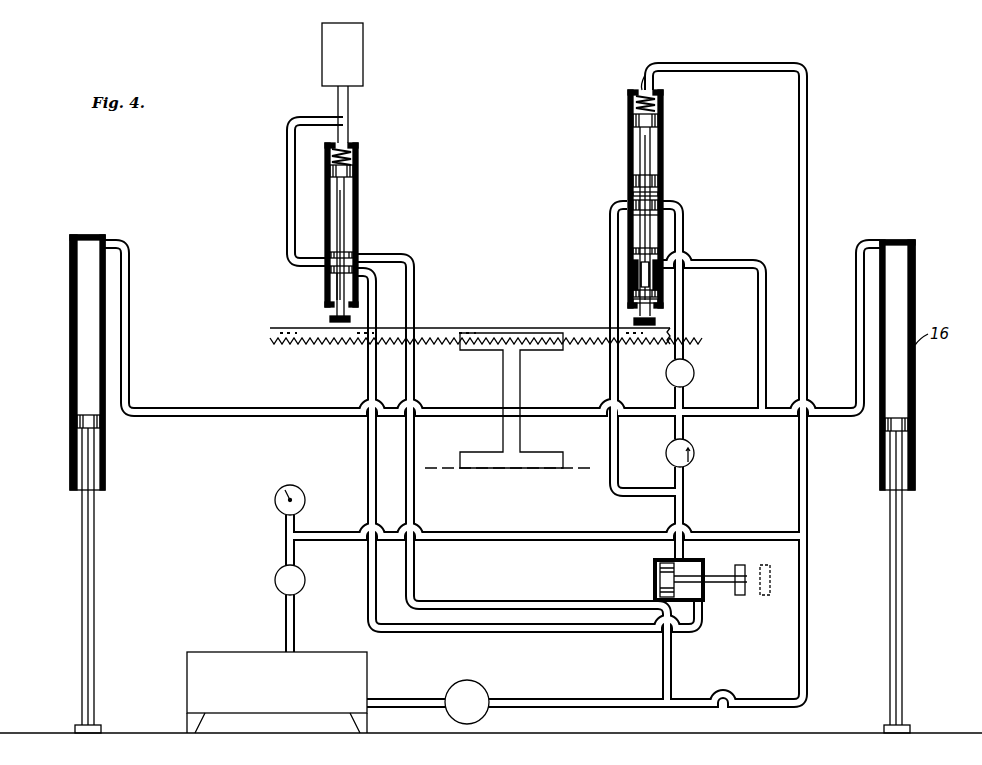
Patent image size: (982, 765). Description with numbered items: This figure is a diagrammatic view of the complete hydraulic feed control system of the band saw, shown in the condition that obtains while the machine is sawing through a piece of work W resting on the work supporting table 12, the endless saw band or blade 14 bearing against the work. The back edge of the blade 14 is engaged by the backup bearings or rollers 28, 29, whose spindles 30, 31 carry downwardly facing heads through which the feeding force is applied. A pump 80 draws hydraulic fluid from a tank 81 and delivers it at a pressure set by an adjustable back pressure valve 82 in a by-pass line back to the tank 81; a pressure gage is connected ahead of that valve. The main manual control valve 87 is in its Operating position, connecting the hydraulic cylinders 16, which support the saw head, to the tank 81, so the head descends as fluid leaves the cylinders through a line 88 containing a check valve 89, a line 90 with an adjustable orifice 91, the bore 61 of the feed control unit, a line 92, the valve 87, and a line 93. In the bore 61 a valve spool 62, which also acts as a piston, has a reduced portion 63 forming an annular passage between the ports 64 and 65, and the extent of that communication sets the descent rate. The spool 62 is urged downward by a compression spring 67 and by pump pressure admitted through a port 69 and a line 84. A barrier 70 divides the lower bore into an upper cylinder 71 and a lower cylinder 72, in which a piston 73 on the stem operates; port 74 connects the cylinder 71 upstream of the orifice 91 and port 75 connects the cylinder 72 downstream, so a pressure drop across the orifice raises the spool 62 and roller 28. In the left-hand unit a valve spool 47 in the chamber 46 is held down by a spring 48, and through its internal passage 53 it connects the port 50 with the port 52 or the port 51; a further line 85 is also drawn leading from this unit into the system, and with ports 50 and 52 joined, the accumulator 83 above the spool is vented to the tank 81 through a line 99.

The work supporting table 12 is at (450, 466).
The endless saw band or blade 14 is at (442, 327).
The hydraulic cylinders 16 is at (70, 345).
The backup bearing or roller 28 is at (626, 320).
The backup bearing or roller 29 is at (322, 318).
The spindle 30 is at (641, 283).
The spindle 31 is at (336, 284).
The valve spool chamber 46 is at (346, 195).
The valve spool 47 is at (355, 172).
The spring 48 is at (358, 150).
The port 50 is at (330, 262).
The port 51 is at (355, 270).
The port 52 is at (368, 278).
The internal passage 53 is at (289, 192).
The vertical bore 61 is at (662, 165).
The valve spool 62 is at (660, 180).
The reduced diameter portion 63 is at (660, 194).
The port 64 is at (660, 205).
The port 65 is at (620, 200).
The compression spring 67 is at (627, 102).
The port 69 is at (644, 80).
The barrier 70 is at (634, 268).
The upper cylinder 71 is at (634, 243).
The lower cylinder 72 is at (660, 300).
The piston 73 is at (634, 294).
The port 74 is at (660, 256).
The port 75 is at (672, 277).
The pump 80 is at (484, 692).
The tank 81 is at (362, 680).
The adjustable back pressure valve 82 is at (275, 579).
The accumulator 83 is at (363, 68).
The line 84 is at (809, 172).
The conduit 85 is at (418, 292).
The main manual control valve 87 is at (648, 578).
The line 88 is at (740, 418).
The check valve 89 is at (694, 457).
The line 90 is at (686, 348).
The adjustable orifice 91 is at (695, 372).
The line 92 is at (621, 381).
The line 93 is at (557, 633).
The line 99 is at (366, 461).
The work W is at (522, 390).